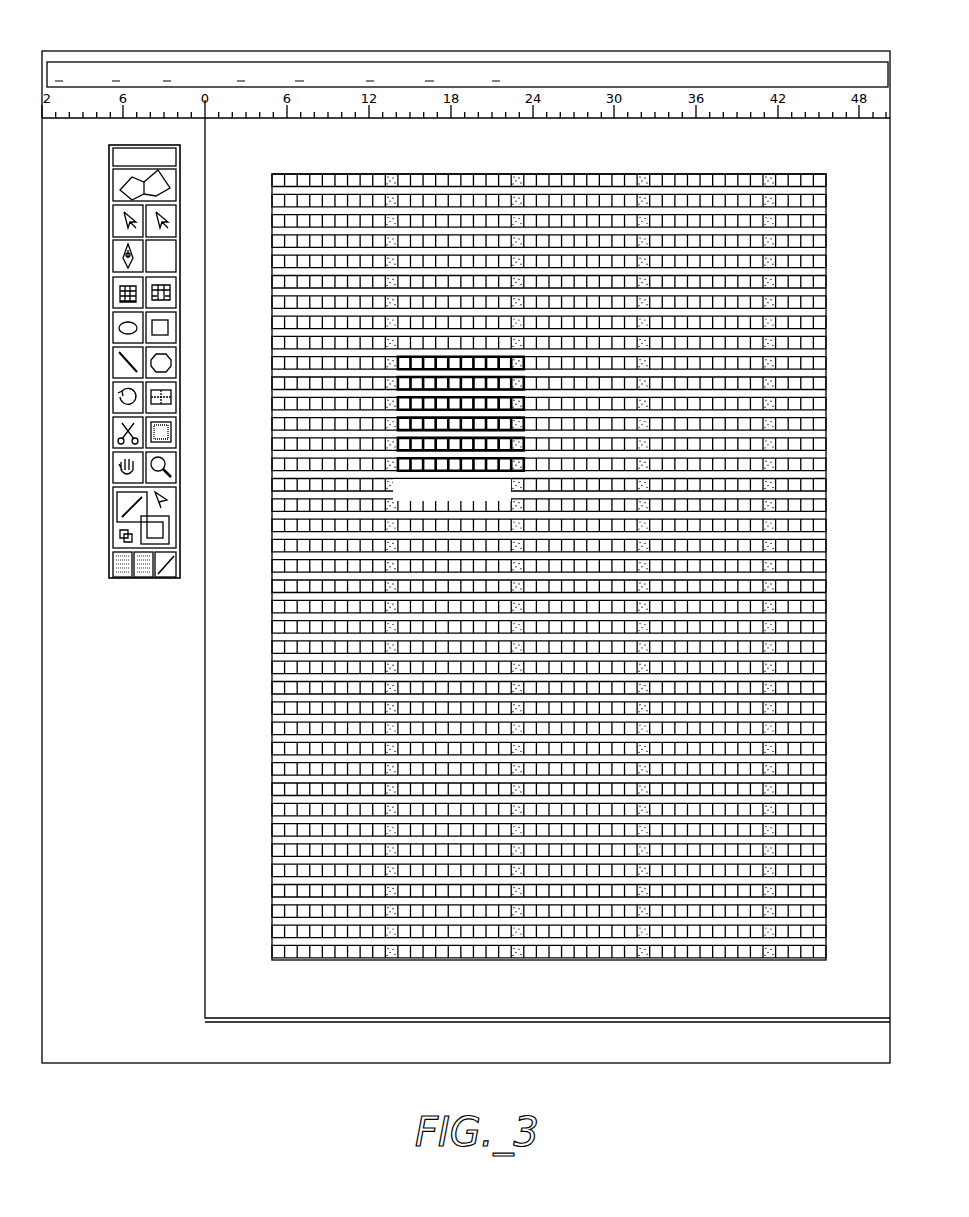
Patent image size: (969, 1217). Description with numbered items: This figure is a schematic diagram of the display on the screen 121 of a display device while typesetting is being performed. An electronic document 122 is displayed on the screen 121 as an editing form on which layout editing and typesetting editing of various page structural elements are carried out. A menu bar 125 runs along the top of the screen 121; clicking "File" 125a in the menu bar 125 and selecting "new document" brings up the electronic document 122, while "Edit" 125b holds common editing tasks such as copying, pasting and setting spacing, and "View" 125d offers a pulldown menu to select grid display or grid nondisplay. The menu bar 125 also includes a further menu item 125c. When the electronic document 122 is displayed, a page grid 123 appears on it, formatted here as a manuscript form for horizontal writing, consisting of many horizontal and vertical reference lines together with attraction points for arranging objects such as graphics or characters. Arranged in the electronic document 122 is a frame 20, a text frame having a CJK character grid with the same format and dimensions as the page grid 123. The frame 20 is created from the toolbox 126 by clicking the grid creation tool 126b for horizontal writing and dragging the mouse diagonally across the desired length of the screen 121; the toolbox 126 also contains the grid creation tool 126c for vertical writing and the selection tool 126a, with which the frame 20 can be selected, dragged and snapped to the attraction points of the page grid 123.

The frame 20 is at (443, 351).
The screen 121 is at (585, 1066).
The electronic document 122 is at (204, 866).
The page grid 123 is at (530, 962).
The menu bar 125 is at (614, 75).
The File menu 125a is at (65, 65).
The Edit menu 125b is at (128, 65).
The Layout menu 125c is at (198, 65).
The View menu 125d is at (382, 65).
The toolbox 126 is at (155, 376).
The selection tool 126a is at (120, 224).
The grid creation tool for horizontal writing 126b is at (120, 296).
The grid creation tool for vertical writing 126c is at (176, 292).